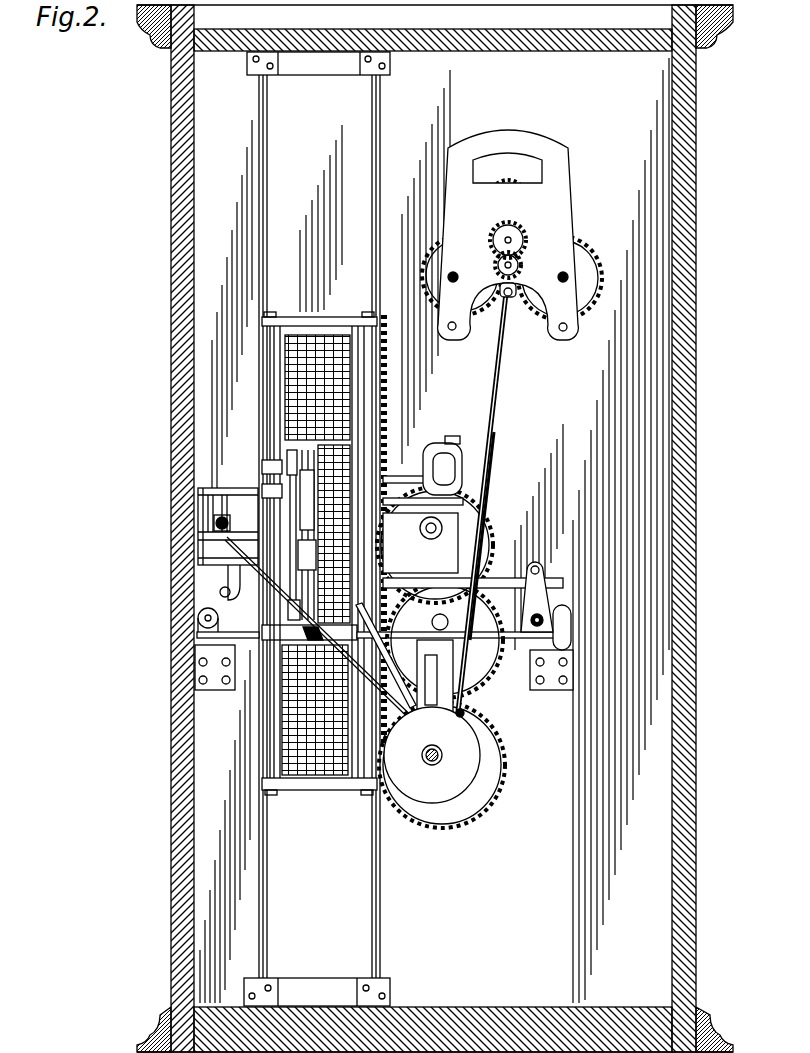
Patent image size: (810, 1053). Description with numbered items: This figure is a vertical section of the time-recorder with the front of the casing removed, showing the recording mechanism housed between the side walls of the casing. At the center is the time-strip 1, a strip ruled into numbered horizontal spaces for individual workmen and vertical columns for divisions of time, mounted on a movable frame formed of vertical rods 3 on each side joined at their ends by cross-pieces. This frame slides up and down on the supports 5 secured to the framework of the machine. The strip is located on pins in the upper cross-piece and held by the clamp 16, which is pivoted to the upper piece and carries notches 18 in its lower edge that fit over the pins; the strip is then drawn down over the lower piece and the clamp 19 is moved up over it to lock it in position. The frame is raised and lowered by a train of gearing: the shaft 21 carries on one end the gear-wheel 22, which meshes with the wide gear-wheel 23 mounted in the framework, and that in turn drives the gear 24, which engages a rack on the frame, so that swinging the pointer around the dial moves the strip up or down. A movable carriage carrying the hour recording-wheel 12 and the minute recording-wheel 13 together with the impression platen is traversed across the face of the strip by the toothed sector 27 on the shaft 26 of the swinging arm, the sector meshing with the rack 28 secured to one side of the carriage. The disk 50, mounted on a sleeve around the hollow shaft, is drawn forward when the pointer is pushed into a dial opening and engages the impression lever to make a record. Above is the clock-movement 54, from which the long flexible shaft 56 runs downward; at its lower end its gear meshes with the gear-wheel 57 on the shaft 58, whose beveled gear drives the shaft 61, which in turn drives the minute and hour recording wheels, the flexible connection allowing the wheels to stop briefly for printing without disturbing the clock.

The time-strip 1 is at (337, 755).
The vertical rods 3 is at (275, 762).
The supports 5 is at (258, 240).
The hour recording-wheel 12 is at (272, 468).
The minute recording-wheel 13 is at (272, 490).
The clamp 16 is at (304, 552).
The notches 18 is at (292, 318).
The clamp 19 is at (301, 782).
The shaft 21 is at (438, 760).
The gear-wheel 22 is at (442, 765).
The gear-wheel 23 is at (445, 640).
The gear 24 is at (420, 543).
The shaft 26 is at (537, 614).
The toothed sector 27 is at (512, 600).
The rack 28 is at (473, 584).
The disk 50 is at (352, 670).
The clock-movement 54 is at (512, 235).
The flexible shaft 56 is at (501, 357).
The gear-wheel 57 is at (465, 715).
The shaft 58 is at (469, 536).
The shaft 61 is at (391, 477).